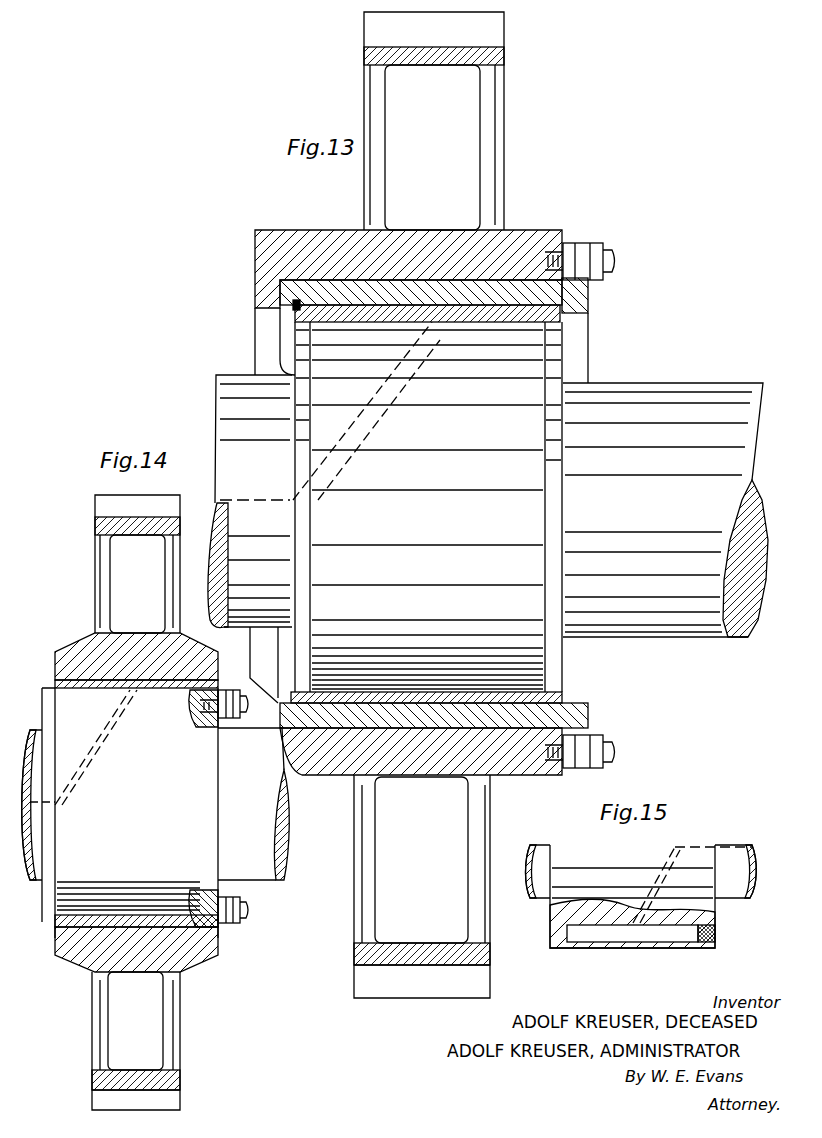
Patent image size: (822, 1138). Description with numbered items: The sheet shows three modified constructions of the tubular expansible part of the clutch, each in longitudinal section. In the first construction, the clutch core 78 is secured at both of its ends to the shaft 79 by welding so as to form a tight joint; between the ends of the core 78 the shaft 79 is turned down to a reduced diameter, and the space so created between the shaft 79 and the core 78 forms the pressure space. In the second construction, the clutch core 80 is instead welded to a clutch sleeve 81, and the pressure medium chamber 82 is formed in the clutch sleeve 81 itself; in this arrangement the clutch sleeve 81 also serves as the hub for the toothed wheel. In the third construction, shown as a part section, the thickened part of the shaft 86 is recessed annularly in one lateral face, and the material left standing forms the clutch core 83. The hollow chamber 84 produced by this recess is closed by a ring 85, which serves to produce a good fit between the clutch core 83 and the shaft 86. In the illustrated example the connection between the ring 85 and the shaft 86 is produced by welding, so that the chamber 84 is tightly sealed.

In FIG. 13, the clutch core 78 is at (292, 302).
In FIG. 13, the shaft 79 is at (678, 398).
In FIG. 14, the shaft 79 is at (233, 800).
In FIG. 14, the clutch core 80 is at (168, 690).
In FIG. 14, the clutch sleeve 81 is at (181, 656).
In FIG. 14, the pressure medium chamber 82 is at (92, 678).
In FIG. 15, the clutch core 83 is at (583, 945).
In FIG. 15, the hollow chamber 84 is at (632, 932).
In FIG. 15, the ring 85 is at (700, 945).
In FIG. 15, the shaft 86 is at (729, 860).